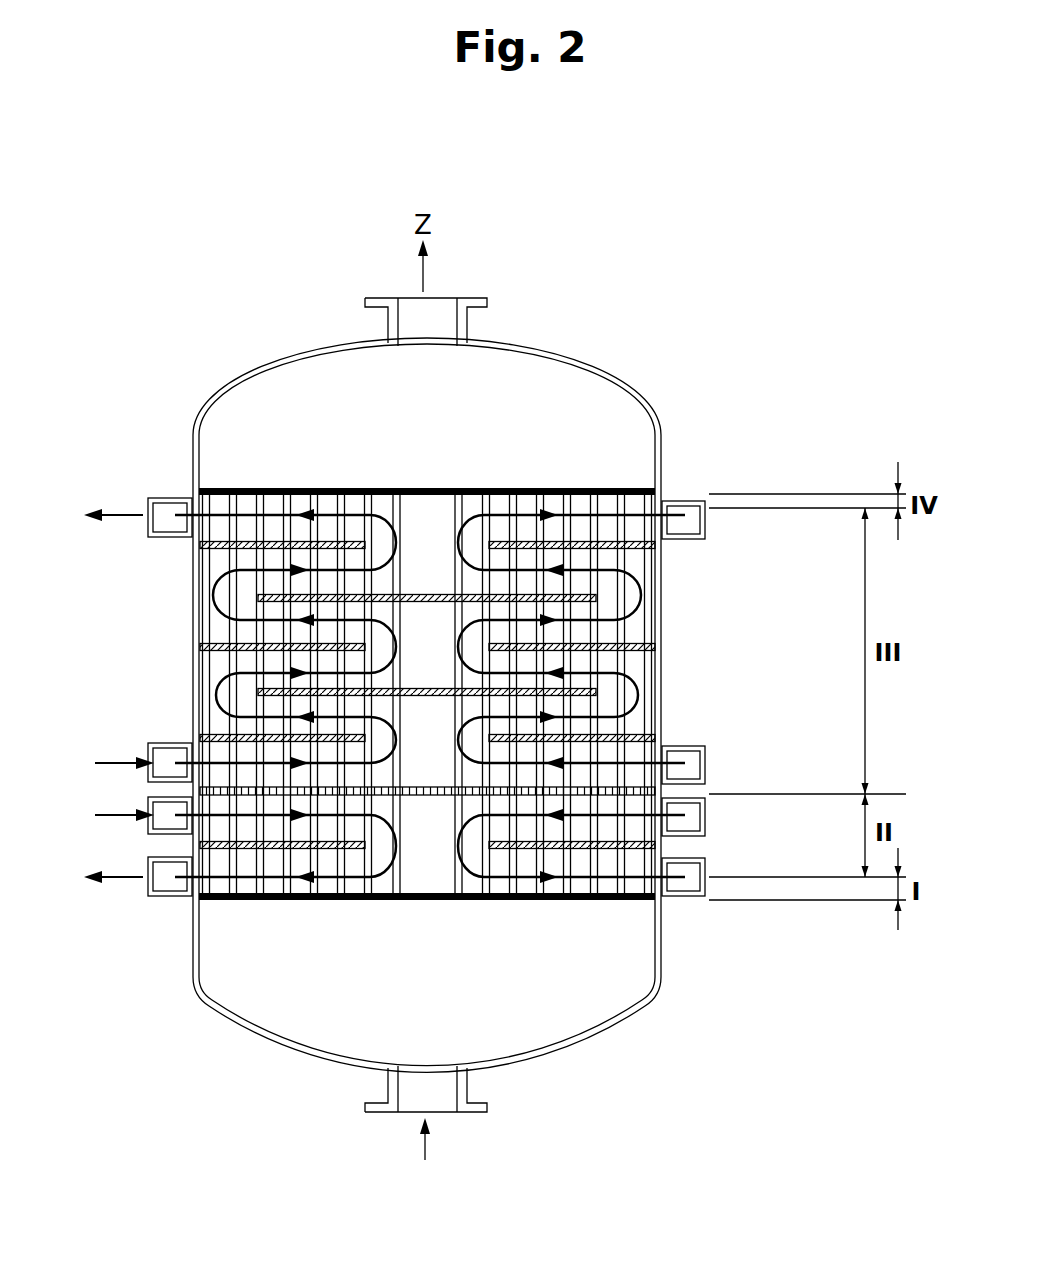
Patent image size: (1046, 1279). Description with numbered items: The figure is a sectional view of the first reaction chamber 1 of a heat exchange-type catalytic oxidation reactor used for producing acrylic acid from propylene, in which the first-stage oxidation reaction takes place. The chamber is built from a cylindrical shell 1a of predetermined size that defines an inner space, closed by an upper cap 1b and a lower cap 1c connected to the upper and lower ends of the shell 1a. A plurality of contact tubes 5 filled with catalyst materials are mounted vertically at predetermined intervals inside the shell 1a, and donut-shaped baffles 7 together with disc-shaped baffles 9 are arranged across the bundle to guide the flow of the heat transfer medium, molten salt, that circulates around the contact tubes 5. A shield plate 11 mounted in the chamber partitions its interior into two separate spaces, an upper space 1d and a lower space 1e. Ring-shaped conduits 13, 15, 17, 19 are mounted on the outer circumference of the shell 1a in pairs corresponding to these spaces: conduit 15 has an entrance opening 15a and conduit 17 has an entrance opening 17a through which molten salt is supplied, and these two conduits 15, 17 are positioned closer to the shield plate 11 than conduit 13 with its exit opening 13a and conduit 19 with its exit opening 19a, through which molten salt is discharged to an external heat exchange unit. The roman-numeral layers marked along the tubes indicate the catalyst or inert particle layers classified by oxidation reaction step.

The first reaction chamber 1 is at (243, 316).
The cylindrical shell 1a is at (195, 650).
The upper cap 1b is at (316, 346).
The lower cap 1c is at (313, 1066).
The space 1d is at (425, 500).
The space 1e is at (425, 900).
The contact tubes 5 is at (368, 490).
The donut-shaped baffles 7 is at (659, 545).
The disc-shaped baffles 9 is at (257, 598).
The shield plate 11 is at (708, 788).
The conduit 13 is at (160, 497).
The exit opening 13a is at (147, 535).
The conduit 15 is at (160, 743).
The entrance opening 15a is at (147, 775).
The conduit 17 is at (158, 834).
The entrance opening 17a is at (147, 823).
The conduit 19 is at (177, 897).
The exit opening 19a is at (147, 887).